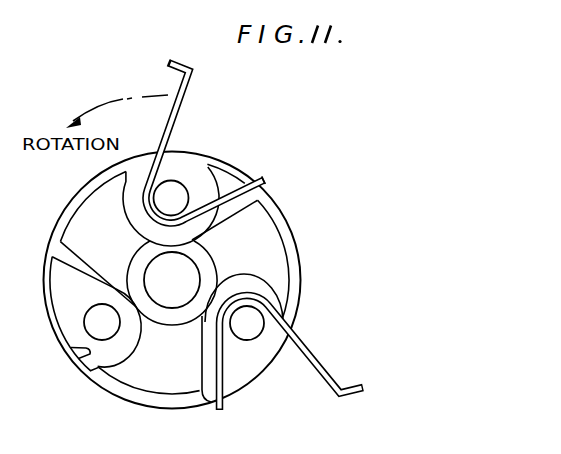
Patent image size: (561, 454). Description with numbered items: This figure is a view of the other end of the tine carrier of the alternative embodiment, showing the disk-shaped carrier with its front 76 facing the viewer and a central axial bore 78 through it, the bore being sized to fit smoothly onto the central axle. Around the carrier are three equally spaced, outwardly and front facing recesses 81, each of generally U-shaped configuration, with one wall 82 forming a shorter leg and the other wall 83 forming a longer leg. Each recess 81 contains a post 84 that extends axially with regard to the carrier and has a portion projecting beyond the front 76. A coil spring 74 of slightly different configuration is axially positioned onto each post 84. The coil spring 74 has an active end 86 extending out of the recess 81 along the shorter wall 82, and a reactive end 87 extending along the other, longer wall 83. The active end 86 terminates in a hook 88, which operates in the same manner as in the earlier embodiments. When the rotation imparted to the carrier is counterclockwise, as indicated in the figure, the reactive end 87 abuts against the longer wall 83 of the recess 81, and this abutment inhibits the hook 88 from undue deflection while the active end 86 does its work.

The coil spring 74 is at (190, 182).
The front 76 is at (260, 244).
The axial bore 78 is at (188, 292).
The recess 81 is at (226, 171).
The wall 82 is at (66, 351).
The wall 83 is at (57, 264).
The post 84 is at (93, 320).
The active end 86 is at (194, 70).
The reactive end 87 is at (265, 176).
The hook 88 is at (168, 65).